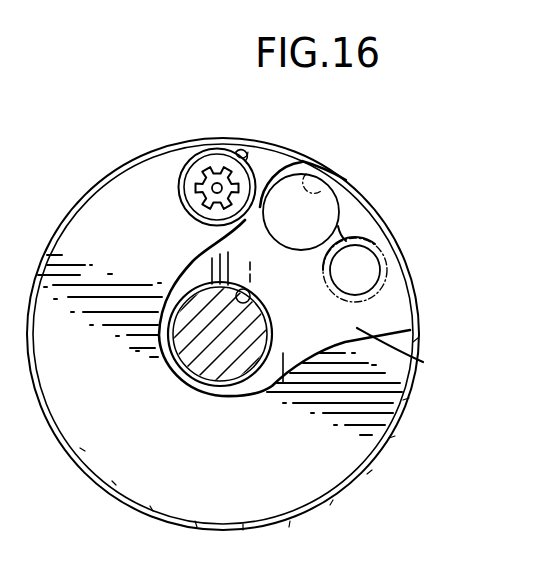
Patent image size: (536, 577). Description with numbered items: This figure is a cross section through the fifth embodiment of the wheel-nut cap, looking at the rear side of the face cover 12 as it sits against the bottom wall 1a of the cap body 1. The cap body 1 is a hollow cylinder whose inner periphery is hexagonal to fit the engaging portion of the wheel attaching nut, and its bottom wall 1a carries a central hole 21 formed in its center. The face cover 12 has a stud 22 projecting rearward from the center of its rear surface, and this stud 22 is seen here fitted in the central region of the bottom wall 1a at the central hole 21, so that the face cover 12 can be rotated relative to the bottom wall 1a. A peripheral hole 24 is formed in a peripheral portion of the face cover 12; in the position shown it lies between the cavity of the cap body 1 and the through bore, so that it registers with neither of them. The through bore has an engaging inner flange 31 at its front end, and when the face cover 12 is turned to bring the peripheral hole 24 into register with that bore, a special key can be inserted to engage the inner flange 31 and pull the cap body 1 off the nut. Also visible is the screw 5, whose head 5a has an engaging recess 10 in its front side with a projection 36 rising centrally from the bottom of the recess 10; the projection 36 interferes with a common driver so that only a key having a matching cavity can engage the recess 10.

The cap body 1 is at (405, 315).
The bottom wall 1a is at (423, 362).
The screw 5 is at (195, 182).
The head 5a is at (205, 163).
The engaging recess 10 is at (202, 196).
The face cover 12 is at (335, 455).
The central hole 21 is at (255, 297).
The stud 22 is at (240, 358).
The peripheral hole 24 is at (240, 155).
The inner flange 31 is at (382, 248).
The projection 36 is at (205, 208).